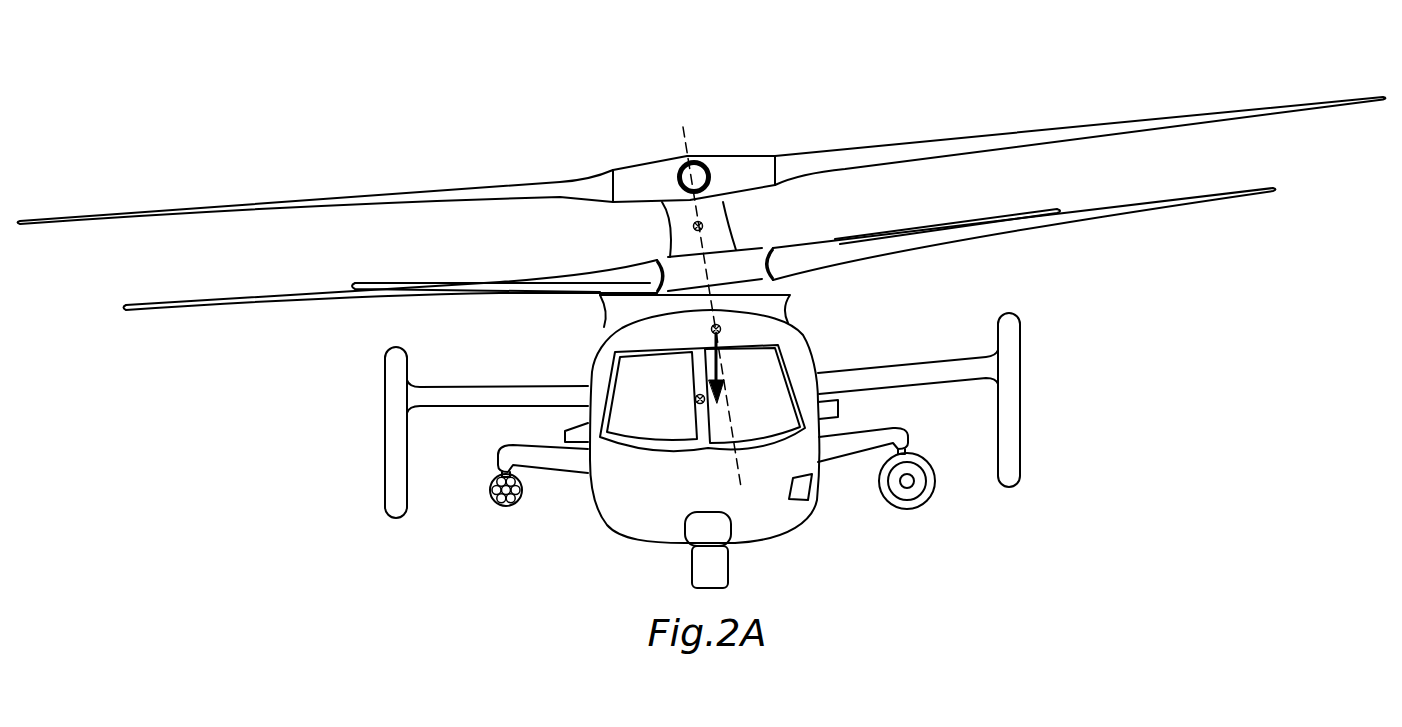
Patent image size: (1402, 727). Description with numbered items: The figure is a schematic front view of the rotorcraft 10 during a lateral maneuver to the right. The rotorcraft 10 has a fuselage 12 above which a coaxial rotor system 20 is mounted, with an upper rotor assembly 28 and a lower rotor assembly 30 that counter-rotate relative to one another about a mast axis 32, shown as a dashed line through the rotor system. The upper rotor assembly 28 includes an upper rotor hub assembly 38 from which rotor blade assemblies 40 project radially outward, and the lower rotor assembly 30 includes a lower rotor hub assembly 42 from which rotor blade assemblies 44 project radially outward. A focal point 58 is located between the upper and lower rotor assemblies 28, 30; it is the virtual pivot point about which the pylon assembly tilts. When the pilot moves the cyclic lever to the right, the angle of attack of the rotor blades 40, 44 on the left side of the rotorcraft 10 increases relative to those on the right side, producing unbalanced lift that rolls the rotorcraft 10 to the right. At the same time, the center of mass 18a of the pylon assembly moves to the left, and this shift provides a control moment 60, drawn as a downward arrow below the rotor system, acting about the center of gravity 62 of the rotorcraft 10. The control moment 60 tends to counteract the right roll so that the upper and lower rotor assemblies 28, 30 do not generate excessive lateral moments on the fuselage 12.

The rotorcraft 10 is at (268, 370).
The fuselage 12 is at (602, 525).
The center of mass of pylon assembly 18a is at (722, 329).
The coaxial rotor system 20 is at (644, 230).
The upper rotor assembly 28 is at (702, 129).
The lower rotor assembly 30 is at (700, 249).
The mast axis 32 is at (683, 140).
The upper rotor hub assembly 38 is at (648, 160).
The rotor blade assemblies 40 is at (1121, 120).
The lower rotor hub assembly 42 is at (762, 246).
The rotor blade assemblies 44 is at (110, 216).
The focal point 58 is at (703, 223).
The control moment 60 is at (720, 361).
The center of gravity 62 is at (695, 399).